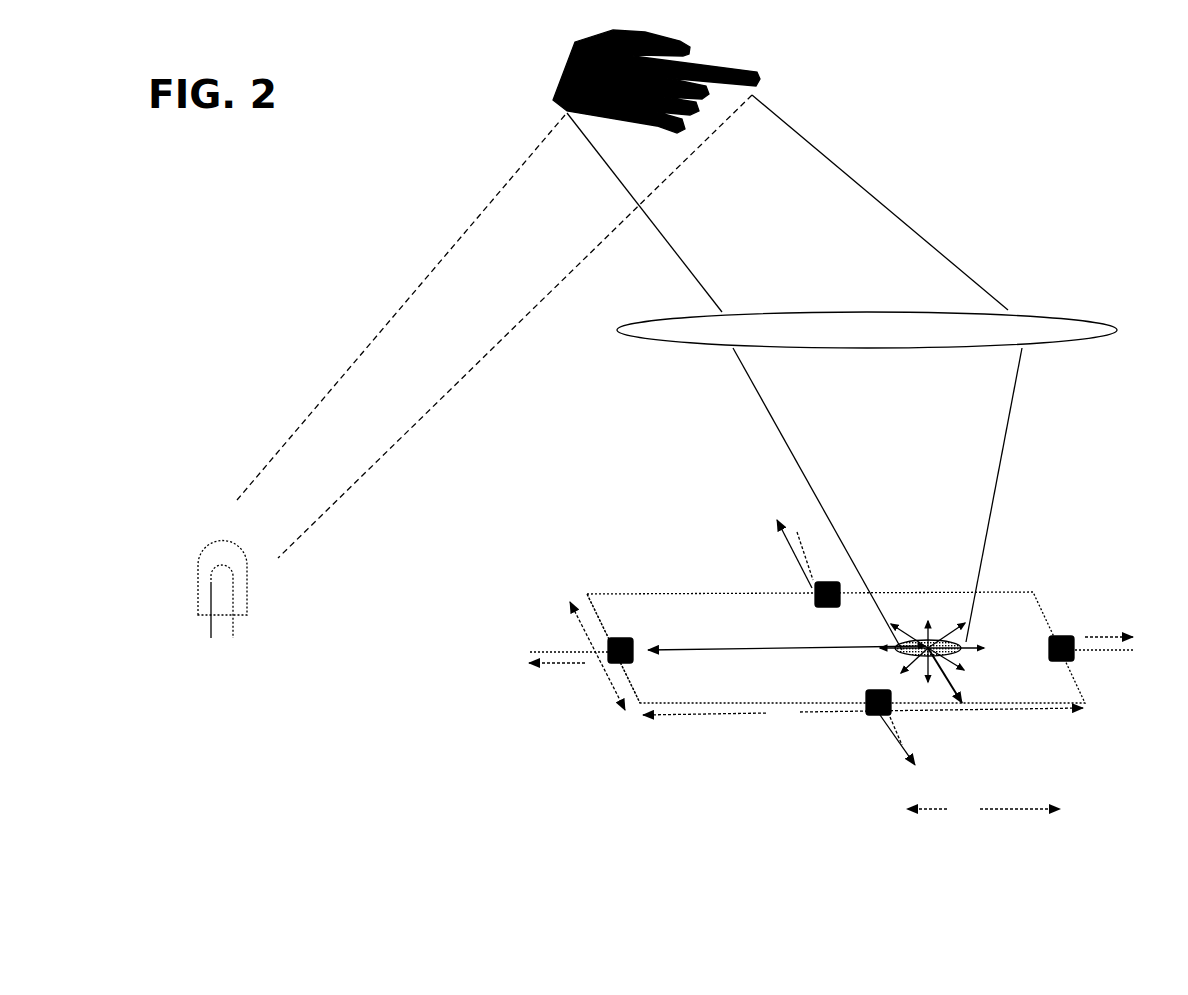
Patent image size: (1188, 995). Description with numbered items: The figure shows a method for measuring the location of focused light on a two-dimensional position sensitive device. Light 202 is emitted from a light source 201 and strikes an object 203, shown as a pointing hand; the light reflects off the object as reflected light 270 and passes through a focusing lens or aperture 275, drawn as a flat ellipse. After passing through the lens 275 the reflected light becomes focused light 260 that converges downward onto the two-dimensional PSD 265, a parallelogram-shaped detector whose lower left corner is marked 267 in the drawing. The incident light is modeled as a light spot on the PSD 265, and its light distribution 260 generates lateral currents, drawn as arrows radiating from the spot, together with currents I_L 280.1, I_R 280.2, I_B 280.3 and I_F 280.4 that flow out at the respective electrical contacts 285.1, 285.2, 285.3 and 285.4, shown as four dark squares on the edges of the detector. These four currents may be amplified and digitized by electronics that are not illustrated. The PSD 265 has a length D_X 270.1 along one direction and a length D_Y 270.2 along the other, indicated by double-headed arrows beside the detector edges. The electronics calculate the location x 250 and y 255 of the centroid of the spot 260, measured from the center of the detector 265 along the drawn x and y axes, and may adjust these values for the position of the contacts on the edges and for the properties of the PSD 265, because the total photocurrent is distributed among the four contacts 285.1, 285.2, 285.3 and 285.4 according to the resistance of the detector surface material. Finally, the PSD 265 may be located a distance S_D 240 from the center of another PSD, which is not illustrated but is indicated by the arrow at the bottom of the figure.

The light source 201 is at (207, 695).
The emitted light 202 is at (494, 326).
The object 203 is at (512, 80).
The distance S_D to center of another PSD 240 is at (968, 825).
The location x 250 is at (765, 625).
The location y 255 is at (981, 688).
The focused light 260 is at (931, 640).
The two-dimensional position sensitive device (PSD) 265 is at (700, 590).
The corner of PSD 267 is at (640, 703).
The reflected light 270 is at (787, 203).
The length D_X 270.1 is at (788, 733).
The length D_Y 270.2 is at (568, 626).
The focusing lens or aperture 275 is at (1073, 322).
The current I_L 280.1 is at (556, 690).
The current I_R 280.2 is at (1104, 624).
The current I_B 280.3 is at (779, 577).
The current I_F 280.4 is at (878, 715).
The electrical contact 285.1 is at (607, 657).
The electrical contact 285.2 is at (1057, 637).
The electrical contact 285.3 is at (832, 582).
The electrical contact 285.4 is at (930, 726).